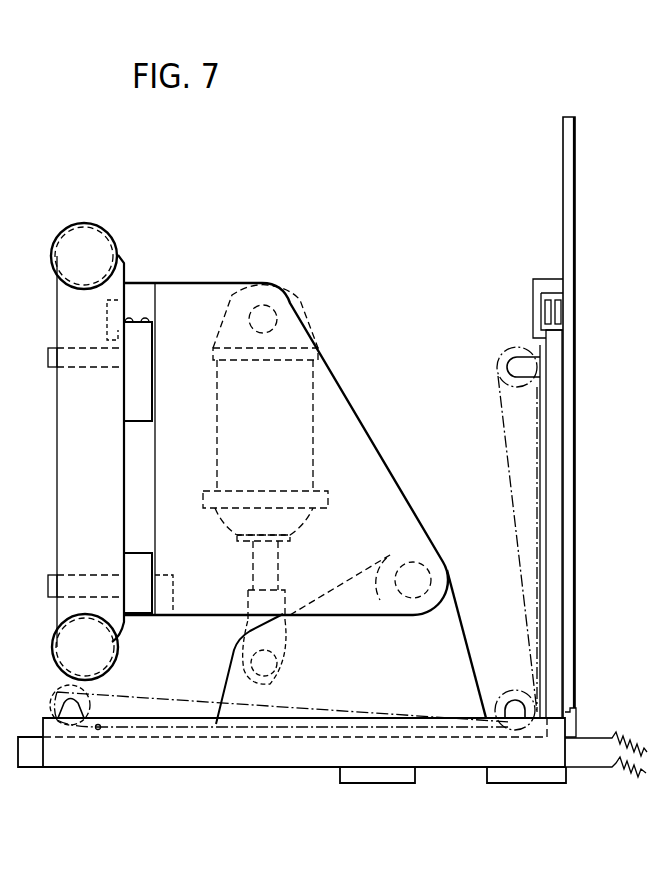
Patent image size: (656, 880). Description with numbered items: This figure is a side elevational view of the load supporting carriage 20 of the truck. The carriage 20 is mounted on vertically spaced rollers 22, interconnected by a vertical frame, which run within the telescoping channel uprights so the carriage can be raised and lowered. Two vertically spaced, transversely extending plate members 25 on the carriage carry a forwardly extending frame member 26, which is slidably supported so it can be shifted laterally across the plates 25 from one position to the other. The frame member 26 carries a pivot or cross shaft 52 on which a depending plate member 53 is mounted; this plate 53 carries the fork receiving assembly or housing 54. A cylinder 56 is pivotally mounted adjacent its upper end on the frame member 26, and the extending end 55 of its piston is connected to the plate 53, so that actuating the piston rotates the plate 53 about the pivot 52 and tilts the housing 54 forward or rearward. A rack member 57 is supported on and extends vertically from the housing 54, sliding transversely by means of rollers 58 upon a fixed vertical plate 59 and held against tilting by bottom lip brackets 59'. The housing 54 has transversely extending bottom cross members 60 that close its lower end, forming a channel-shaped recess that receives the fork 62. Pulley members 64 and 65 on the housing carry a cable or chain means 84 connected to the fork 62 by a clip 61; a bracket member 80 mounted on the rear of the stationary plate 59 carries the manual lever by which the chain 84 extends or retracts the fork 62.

The load supporting carriage 20 is at (70, 443).
The rollers 22 is at (58, 255).
The transversely extending plate members 25 is at (142, 393).
The frame member 26 is at (357, 410).
The pivot or cross shaft 52 is at (418, 577).
The depending plate members 53 is at (446, 625).
The fork receiving assembly 54 is at (235, 757).
The extending end of piston 55 is at (243, 660).
The cylinder 56 is at (302, 385).
The rack member 57 is at (568, 255).
The rollers 58 is at (555, 300).
The fixed vertical plate 59 is at (580, 524).
The bottom lip brackets 59' is at (596, 715).
The bottom cross members 60 is at (382, 776).
The clip 61 is at (100, 722).
The forks 62 is at (600, 748).
The pulley member 64 is at (57, 700).
The pulley member 65 is at (509, 700).
The bracket member 80 is at (540, 356).
The cable or chain means 84 is at (512, 460).